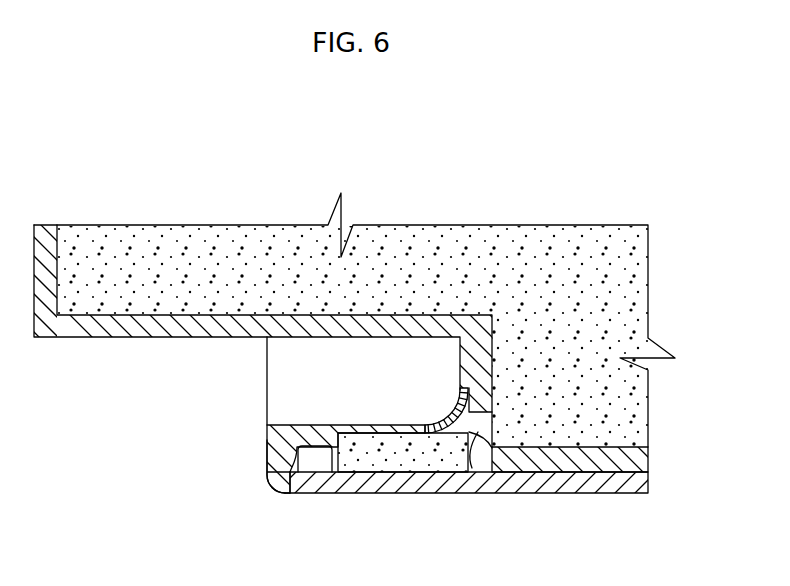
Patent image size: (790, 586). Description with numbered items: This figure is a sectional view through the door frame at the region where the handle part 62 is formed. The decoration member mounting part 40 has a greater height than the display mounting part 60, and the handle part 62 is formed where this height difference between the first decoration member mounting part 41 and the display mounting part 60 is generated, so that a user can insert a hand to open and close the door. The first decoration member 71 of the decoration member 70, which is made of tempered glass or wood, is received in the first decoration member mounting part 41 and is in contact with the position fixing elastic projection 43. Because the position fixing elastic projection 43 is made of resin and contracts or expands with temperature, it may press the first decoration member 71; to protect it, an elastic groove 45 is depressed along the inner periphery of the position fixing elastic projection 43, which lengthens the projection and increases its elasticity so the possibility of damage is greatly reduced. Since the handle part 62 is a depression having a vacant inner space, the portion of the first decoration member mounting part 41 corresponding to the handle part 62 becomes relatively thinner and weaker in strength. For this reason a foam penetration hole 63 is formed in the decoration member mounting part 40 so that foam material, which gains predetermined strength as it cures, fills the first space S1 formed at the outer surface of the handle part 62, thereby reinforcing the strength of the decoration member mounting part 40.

The display mounting part 60 is at (73, 337).
The decoration member mounting part 40 is at (393, 353).
The first decoration member mounting part 41 is at (638, 472).
The decoration member 70 is at (478, 509).
The first decoration member 71 is at (512, 485).
The handle part 62 is at (283, 400).
The position fixing elastic projection 43 is at (268, 474).
The elastic groove 45 is at (322, 462).
The foam penetration hole 63 is at (468, 387).
The first space S1 is at (428, 464).